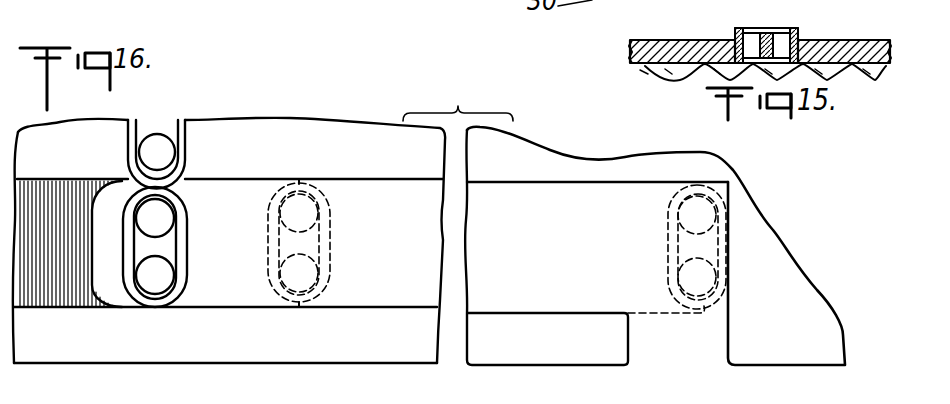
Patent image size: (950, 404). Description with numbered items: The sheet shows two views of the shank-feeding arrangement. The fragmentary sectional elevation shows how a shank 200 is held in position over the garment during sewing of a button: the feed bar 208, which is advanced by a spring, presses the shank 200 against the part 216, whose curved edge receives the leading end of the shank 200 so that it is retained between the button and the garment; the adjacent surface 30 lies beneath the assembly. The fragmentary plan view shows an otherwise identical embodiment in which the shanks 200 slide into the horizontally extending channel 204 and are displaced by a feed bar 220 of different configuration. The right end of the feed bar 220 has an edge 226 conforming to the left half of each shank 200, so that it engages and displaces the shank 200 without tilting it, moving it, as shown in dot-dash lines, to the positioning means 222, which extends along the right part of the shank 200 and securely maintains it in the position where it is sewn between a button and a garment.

In FIG. 16, the shank 200 is at (160, 133).
In FIG. 15, the shank 200 is at (781, 21).
In FIG. 16, the horizontally extending channel 204 is at (397, 308).
In FIG. 16, the feed bar 220 is at (42, 191).
In FIG. 16, the positioning means 222 is at (787, 292).
In FIG. 16, the edge 226 is at (104, 223).
In FIG. 15, the feed bar 208 is at (703, 29).
In FIG. 15, the part 216 is at (857, 29).
In FIG. 15, the corrugated surface 30 is at (680, 75).